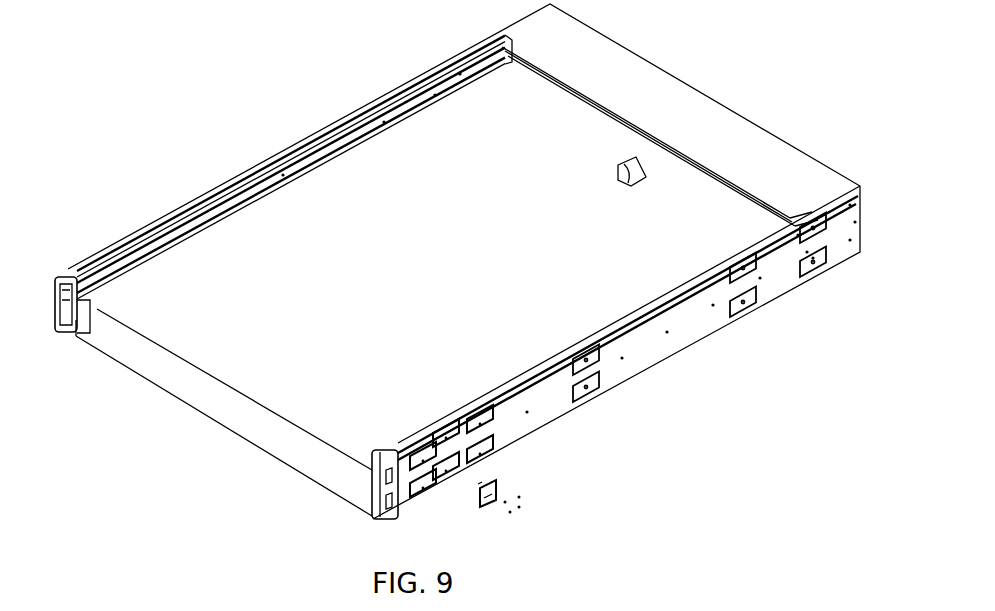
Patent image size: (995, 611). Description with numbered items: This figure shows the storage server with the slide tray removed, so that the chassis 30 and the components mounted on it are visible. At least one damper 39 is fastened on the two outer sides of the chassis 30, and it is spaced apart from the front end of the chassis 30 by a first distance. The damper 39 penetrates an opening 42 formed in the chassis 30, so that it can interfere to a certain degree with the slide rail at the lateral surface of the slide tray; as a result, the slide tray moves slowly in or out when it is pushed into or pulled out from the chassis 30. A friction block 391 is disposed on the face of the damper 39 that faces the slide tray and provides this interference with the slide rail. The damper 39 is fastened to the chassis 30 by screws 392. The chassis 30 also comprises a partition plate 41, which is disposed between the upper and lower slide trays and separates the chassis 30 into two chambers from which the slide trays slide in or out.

The chassis 30 is at (145, 383).
The partition plate 41 is at (288, 421).
The opening 42 is at (464, 478).
The damper 39 is at (487, 505).
The friction block 391 is at (481, 484).
The screws 392 is at (522, 509).